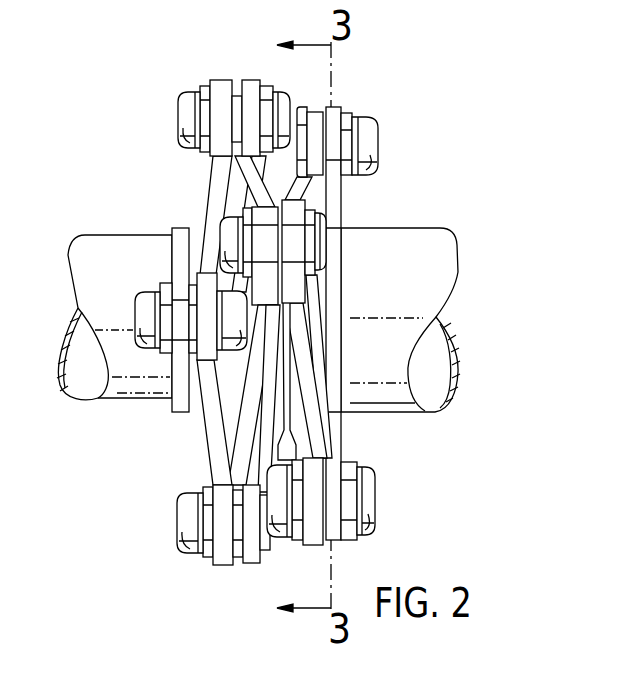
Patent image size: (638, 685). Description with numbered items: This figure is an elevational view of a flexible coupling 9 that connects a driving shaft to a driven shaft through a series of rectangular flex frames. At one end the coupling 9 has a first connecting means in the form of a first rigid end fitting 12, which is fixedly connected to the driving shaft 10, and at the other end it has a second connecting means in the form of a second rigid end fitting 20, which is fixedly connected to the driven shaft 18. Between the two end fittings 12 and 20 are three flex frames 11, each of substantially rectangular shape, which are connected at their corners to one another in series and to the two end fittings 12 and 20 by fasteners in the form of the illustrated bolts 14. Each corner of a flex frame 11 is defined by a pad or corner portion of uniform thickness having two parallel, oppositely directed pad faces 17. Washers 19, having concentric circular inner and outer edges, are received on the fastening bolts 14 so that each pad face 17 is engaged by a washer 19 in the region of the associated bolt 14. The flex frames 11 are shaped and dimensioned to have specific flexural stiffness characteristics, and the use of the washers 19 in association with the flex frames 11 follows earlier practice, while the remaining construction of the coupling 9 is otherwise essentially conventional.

The flexible coupling 9 is at (387, 119).
The driving shaft 10 is at (115, 385).
The flex frame 11 is at (312, 537).
The first rigid end fitting 12 is at (177, 413).
The bolt 14 is at (178, 130).
The pad face 17 is at (300, 115).
The driven shaft 18 is at (410, 230).
The washer 19 is at (258, 82).
The second rigid end fitting 20 is at (341, 210).